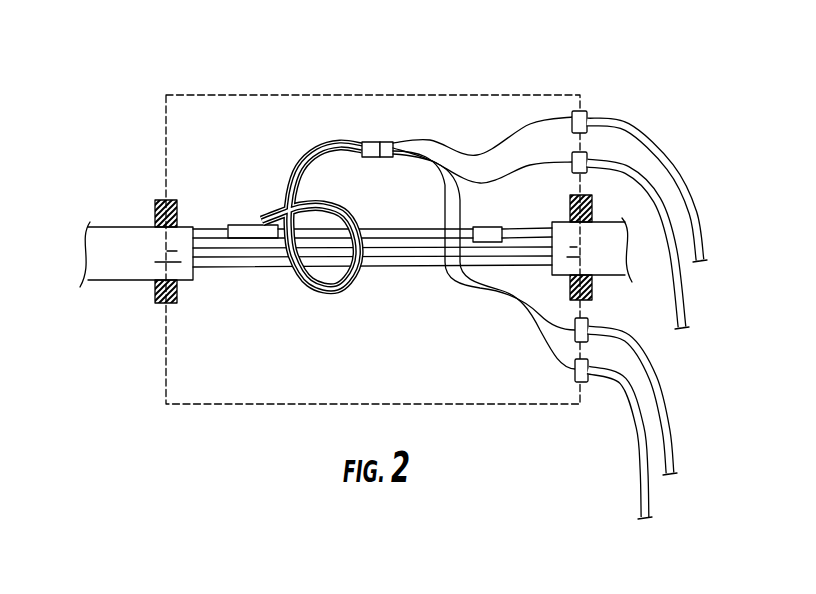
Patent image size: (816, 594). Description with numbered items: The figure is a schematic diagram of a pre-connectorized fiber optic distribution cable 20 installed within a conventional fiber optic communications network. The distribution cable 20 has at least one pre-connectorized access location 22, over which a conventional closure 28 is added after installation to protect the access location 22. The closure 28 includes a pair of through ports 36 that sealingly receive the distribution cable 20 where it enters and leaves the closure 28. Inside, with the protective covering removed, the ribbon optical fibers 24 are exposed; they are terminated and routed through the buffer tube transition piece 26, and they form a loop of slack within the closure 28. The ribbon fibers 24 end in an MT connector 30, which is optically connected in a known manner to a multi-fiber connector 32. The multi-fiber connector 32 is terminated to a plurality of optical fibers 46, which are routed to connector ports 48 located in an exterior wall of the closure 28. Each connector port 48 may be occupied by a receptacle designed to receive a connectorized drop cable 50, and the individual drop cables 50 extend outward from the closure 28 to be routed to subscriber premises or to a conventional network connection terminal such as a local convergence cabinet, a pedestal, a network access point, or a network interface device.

The fiber optic distribution cable 20 is at (99, 226).
The pre-connectorized access location 22 is at (577, 83).
The ribbon optical fibers 24 is at (300, 160).
The buffer tube transition piece 26 is at (235, 226).
The closure 28 is at (580, 97).
The MT connector 30 is at (386, 142).
The multi-fiber connector 32 is at (395, 142).
The through ports 36 is at (155, 208).
The optical fibers 46 is at (483, 150).
The connector ports 48 is at (585, 110).
The drop cables 50 is at (670, 147).